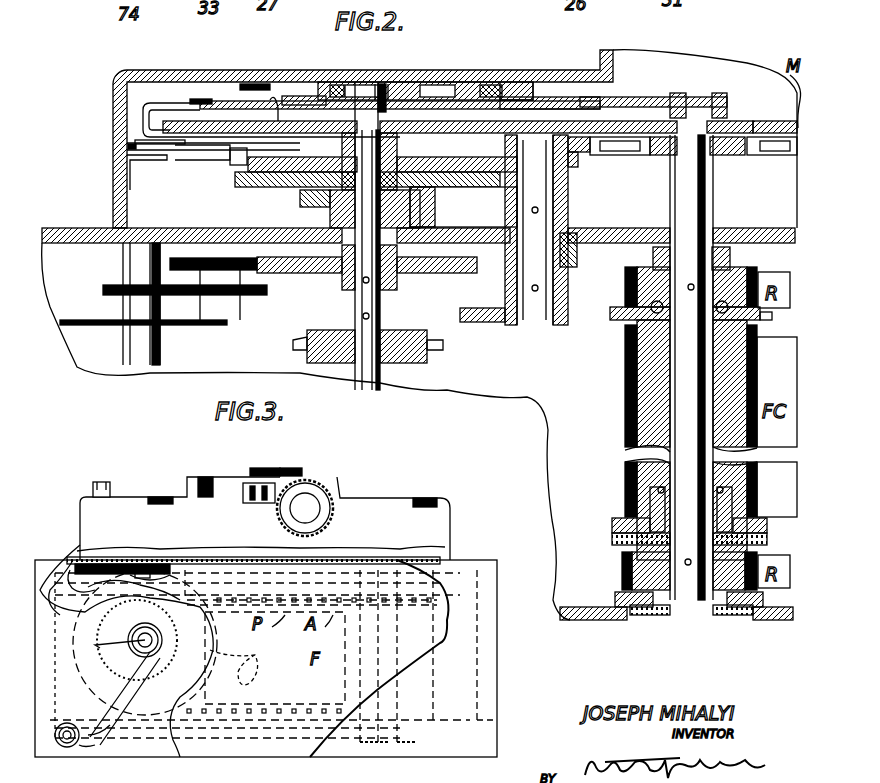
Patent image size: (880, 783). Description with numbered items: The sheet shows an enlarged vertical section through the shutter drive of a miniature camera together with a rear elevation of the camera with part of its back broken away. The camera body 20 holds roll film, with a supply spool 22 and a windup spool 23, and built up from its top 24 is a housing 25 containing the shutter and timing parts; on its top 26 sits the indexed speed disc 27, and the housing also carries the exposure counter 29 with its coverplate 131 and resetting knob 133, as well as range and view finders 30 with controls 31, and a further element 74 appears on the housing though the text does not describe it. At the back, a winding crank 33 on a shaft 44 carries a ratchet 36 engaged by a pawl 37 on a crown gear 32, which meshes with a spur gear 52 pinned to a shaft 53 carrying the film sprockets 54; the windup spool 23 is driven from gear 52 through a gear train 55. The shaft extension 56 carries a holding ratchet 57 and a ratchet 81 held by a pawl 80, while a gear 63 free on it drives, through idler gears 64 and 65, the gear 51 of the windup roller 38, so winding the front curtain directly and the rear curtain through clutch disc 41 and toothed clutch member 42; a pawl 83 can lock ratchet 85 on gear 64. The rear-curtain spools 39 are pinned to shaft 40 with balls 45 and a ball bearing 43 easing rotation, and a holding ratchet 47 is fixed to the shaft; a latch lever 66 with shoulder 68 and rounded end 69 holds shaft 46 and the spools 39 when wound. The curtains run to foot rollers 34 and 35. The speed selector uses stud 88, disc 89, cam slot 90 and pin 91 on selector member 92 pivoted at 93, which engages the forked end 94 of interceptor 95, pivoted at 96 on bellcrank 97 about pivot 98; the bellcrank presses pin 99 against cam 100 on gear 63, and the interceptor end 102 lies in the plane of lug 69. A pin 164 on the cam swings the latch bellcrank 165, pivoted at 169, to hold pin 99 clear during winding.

In FIG. 2, the camera body 20 is at (75, 360).
In FIG. 3, the camera body 20 is at (497, 572).
In FIG. 3, the supply spool 22 is at (485, 630).
In FIG. 2, the windup spool 23 is at (130, 365).
In FIG. 2, the top of the camera body 24 is at (80, 228).
In FIG. 3, the top of the camera body 24 is at (358, 548).
In FIG. 2, the housing 25 is at (127, 157).
In FIG. 3, the housing 25 is at (452, 508).
In FIG. 2, the top of the housing 26 is at (200, 70).
In FIG. 2, the indexed disc 27 is at (508, 82).
In FIG. 3, the indexed disc 27 is at (155, 497).
In FIG. 3, the exposure counter 29 is at (310, 480).
In FIG. 3, the range and view finders 30 is at (325, 490).
In FIG. 3, the adjusting and compensating controls 31 is at (428, 498).
In FIG. 3, the crown gear 32 is at (200, 660).
In FIG. 3, the winding crank 33 is at (108, 718).
In FIG. 3, the foot roller 34 is at (365, 745).
In FIG. 3, the foot roller 35 is at (397, 745).
In FIG. 3, the ratchet 36 is at (170, 745).
In FIG. 3, the pawl 37 is at (67, 558).
In FIG. 2, the windup roller 38 is at (637, 402).
In FIG. 3, the windup roller 38 is at (200, 618).
In FIG. 2, the spools 39 is at (745, 265).
In FIG. 3, the spools 39 is at (190, 572).
In FIG. 2, the shaft 40 is at (650, 450).
In FIG. 2, the clutch disc 41 is at (612, 538).
In FIG. 2, the toothed clutch member 42 is at (637, 514).
In FIG. 2, the ball bearing 43 is at (637, 486).
In FIG. 3, the shaft 44 is at (140, 640).
In FIG. 2, the balls 45 is at (630, 322).
In FIG. 2, the shaft 46 is at (713, 205).
In FIG. 2, the holding ratchet 47 is at (735, 155).
In FIG. 2, the gear 51 is at (772, 317).
In FIG. 2, the spur gear 52 is at (462, 273).
In FIG. 3, the spur gear 52 is at (172, 570).
In FIG. 2, the shaft 53 is at (363, 385).
In FIG. 2, the sprockets 54 is at (428, 348).
In FIG. 3, the sprockets 54 is at (115, 745).
In FIG. 2, the gear train 55 is at (245, 290).
In FIG. 3, the gear train 55 is at (72, 560).
In FIG. 2, the shaft extension 56 is at (330, 208).
In FIG. 2, the holding ratchet 57 is at (437, 192).
In FIG. 2, the gear 63 is at (262, 172).
In FIG. 2, the idler gear 64 is at (580, 172).
In FIG. 2, the idler gear 65 is at (485, 322).
In FIG. 2, the latch lever 66 is at (197, 147).
In FIG. 2, the shoulder 68 is at (756, 127).
In FIG. 2, the rounded portion 69 is at (193, 103).
In FIG. 3, the button 74 is at (104, 482).
In FIG. 2, the pawl 80 is at (300, 197).
In FIG. 3, the pawl 80 is at (108, 557).
In FIG. 2, the ratchet 81 is at (340, 270).
In FIG. 3, the ratchet 81 is at (135, 564).
In FIG. 2, the pawl 83 is at (656, 155).
In FIG. 2, the ratchet 85 is at (590, 150).
In FIG. 2, the stud 88 is at (438, 82).
In FIG. 2, the disc 89 is at (491, 85).
In FIG. 2, the cam slot 90 is at (340, 85).
In FIG. 2, the pin 91 is at (380, 84).
In FIG. 2, the selector member 92 is at (727, 102).
In FIG. 2, the pivot 93 is at (240, 96).
In FIG. 2, the forked end 94 is at (716, 93).
In FIG. 2, the interceptor 95 is at (636, 121).
In FIG. 2, the pivot 96 is at (385, 100).
In FIG. 2, the bellcrank 97 is at (278, 100).
In FIG. 2, the pivot 98 is at (300, 96).
In FIG. 2, the pin 99 is at (230, 160).
In FIG. 2, the cam 100 is at (240, 182).
In FIG. 2, the left end of interceptor 102 is at (196, 99).
In FIG. 3, the coverplate 131 is at (247, 468).
In FIG. 3, the knob 133 is at (287, 468).
In FIG. 2, the pin 164 is at (265, 84).
In FIG. 2, the latch bellcrank 165 is at (127, 146).
In FIG. 2, the pivot 169 is at (135, 142).